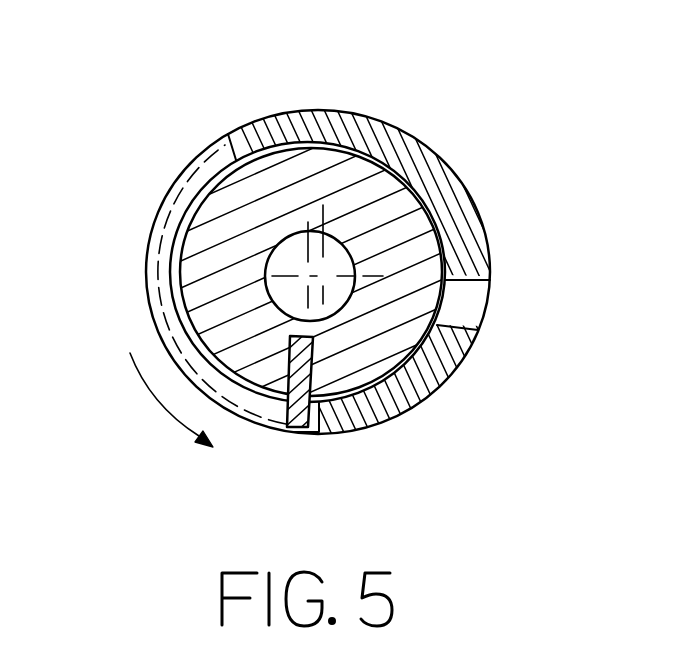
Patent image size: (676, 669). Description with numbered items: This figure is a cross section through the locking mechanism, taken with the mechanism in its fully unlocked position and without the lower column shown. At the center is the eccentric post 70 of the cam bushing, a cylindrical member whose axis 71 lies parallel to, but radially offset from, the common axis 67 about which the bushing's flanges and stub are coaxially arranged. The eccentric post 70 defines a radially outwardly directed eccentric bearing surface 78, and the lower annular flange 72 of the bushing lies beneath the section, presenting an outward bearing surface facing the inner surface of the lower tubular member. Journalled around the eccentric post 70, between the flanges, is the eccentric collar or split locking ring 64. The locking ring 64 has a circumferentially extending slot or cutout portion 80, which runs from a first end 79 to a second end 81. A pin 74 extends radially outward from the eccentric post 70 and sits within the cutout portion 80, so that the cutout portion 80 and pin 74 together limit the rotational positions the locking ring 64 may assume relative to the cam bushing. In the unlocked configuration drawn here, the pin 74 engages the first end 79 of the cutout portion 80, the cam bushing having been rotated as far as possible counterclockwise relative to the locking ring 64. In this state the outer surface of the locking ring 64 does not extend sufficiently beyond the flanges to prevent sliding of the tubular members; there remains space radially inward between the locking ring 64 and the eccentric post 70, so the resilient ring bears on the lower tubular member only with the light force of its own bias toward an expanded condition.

The split locking ring 64 is at (327, 258).
The common axis 67 is at (405, 207).
The eccentric post 70 is at (251, 283).
The axis of the eccentric post 71 is at (187, 262).
The lower annular flange 72 is at (219, 240).
The pin 74 is at (308, 417).
The eccentric bearing surface 78 is at (515, 305).
The first end of the cutout portion 79 is at (361, 456).
The cutout portion 80 is at (266, 260).
The second end of the cutout portion 81 is at (327, 258).